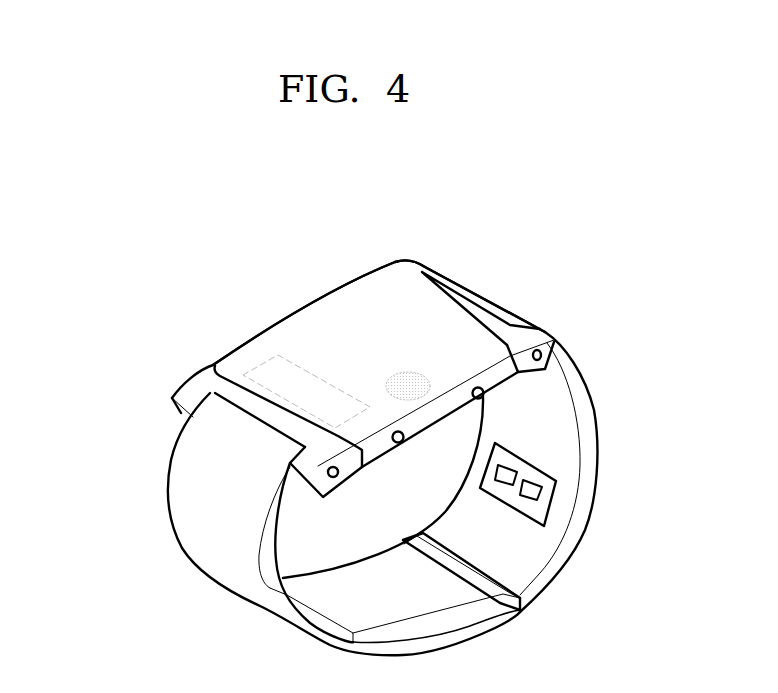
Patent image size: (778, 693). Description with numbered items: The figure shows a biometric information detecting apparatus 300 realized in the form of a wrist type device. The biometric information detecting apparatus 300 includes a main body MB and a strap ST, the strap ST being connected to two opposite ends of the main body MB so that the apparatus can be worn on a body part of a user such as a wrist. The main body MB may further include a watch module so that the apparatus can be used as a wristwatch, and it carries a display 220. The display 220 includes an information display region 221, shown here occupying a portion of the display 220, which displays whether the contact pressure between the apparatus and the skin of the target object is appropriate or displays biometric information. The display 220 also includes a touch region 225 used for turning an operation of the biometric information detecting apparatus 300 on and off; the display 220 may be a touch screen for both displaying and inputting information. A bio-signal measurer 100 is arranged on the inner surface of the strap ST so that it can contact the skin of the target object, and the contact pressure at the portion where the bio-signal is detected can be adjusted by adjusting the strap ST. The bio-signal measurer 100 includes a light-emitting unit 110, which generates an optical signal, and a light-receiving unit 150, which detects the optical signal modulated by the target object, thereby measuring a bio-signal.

The biometric information detecting apparatus 300 is at (124, 328).
The main body MB is at (300, 338).
The display 220 is at (347, 302).
The information display region 221 is at (256, 366).
The touch region 225 is at (408, 372).
The strap ST is at (187, 486).
The bio-signal measurer 100 is at (558, 489).
The light-emitting unit 110 is at (500, 487).
The light-receiving unit 150 is at (536, 494).